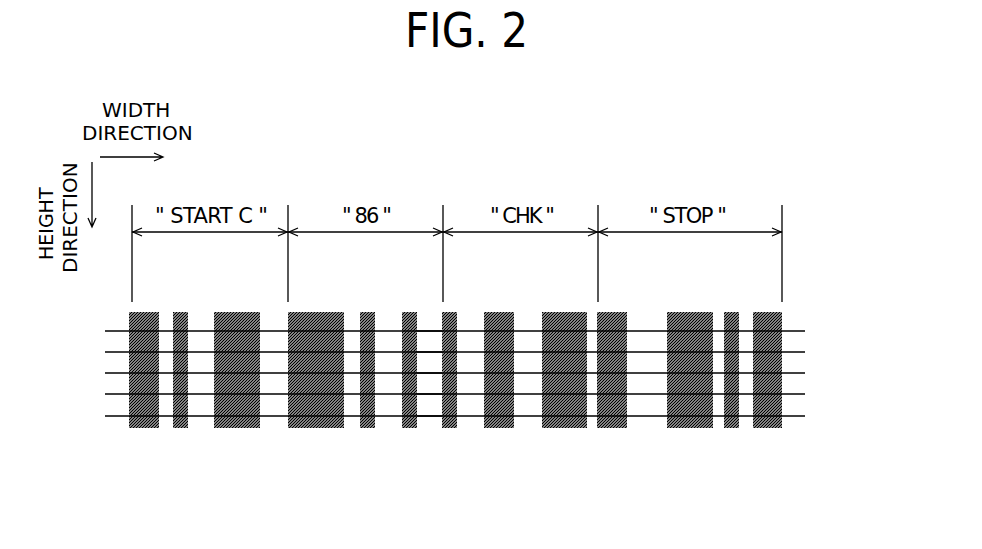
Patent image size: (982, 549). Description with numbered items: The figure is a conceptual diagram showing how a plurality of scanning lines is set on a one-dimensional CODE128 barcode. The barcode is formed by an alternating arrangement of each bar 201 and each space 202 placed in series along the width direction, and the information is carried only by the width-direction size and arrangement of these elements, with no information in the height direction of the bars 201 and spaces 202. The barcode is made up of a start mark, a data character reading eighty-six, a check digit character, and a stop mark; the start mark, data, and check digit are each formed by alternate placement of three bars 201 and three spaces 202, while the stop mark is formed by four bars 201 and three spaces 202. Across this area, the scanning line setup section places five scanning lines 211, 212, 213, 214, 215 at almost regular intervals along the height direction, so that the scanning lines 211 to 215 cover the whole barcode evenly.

The bar 201 is at (317, 429).
The space 202 is at (425, 429).
The scanning line 211 is at (796, 331).
The scanning line 212 is at (796, 352).
The scanning line 213 is at (796, 373).
The scanning line 214 is at (796, 394).
The scanning line 215 is at (796, 416).